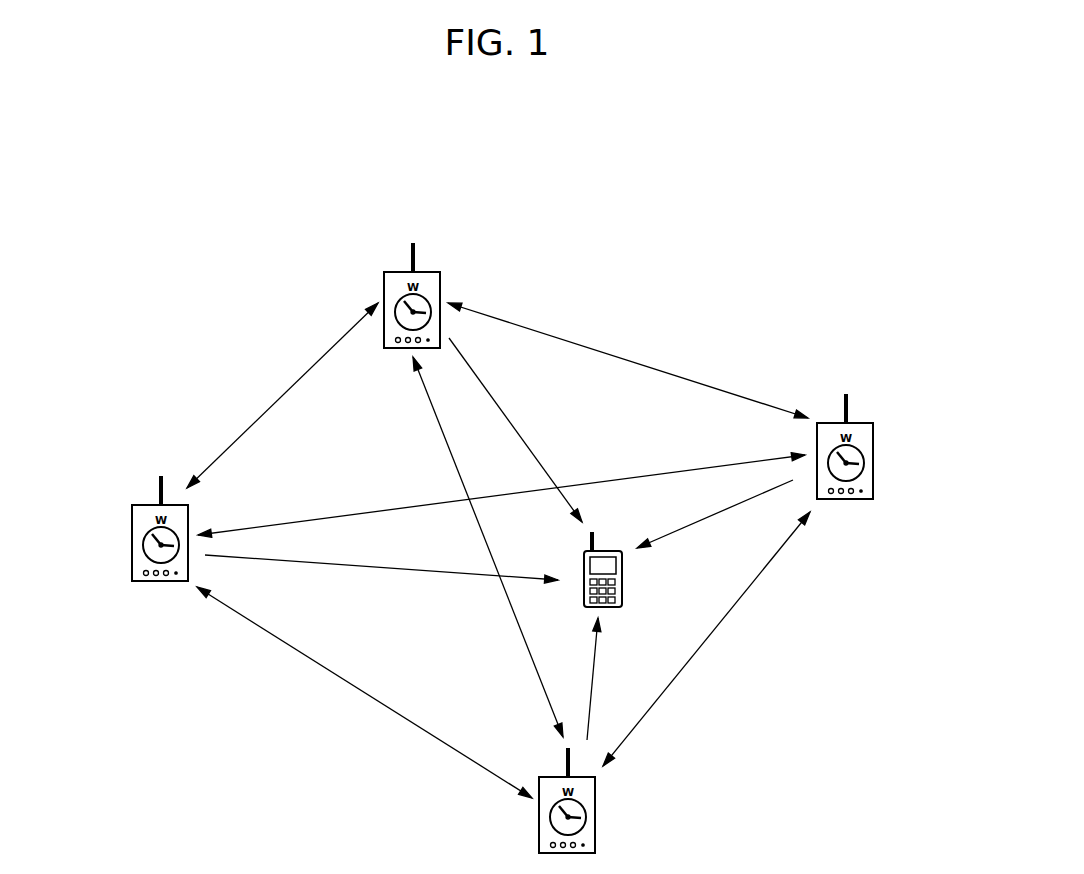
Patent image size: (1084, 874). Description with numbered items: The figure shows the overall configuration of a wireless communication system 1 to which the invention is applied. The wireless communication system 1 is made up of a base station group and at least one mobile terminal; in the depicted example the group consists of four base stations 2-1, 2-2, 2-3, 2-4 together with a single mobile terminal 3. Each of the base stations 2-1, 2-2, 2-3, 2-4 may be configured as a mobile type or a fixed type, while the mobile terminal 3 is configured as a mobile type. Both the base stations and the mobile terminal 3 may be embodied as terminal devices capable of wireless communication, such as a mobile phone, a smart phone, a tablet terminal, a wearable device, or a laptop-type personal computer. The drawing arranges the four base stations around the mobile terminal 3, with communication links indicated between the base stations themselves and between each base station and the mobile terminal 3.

The wireless communication system 1 is at (680, 268).
The base station 2-1 is at (873, 452).
The base station 2-2 is at (595, 824).
The base station 2-3 is at (132, 535).
The base station 2-4 is at (384, 286).
The mobile terminal 3 is at (623, 580).